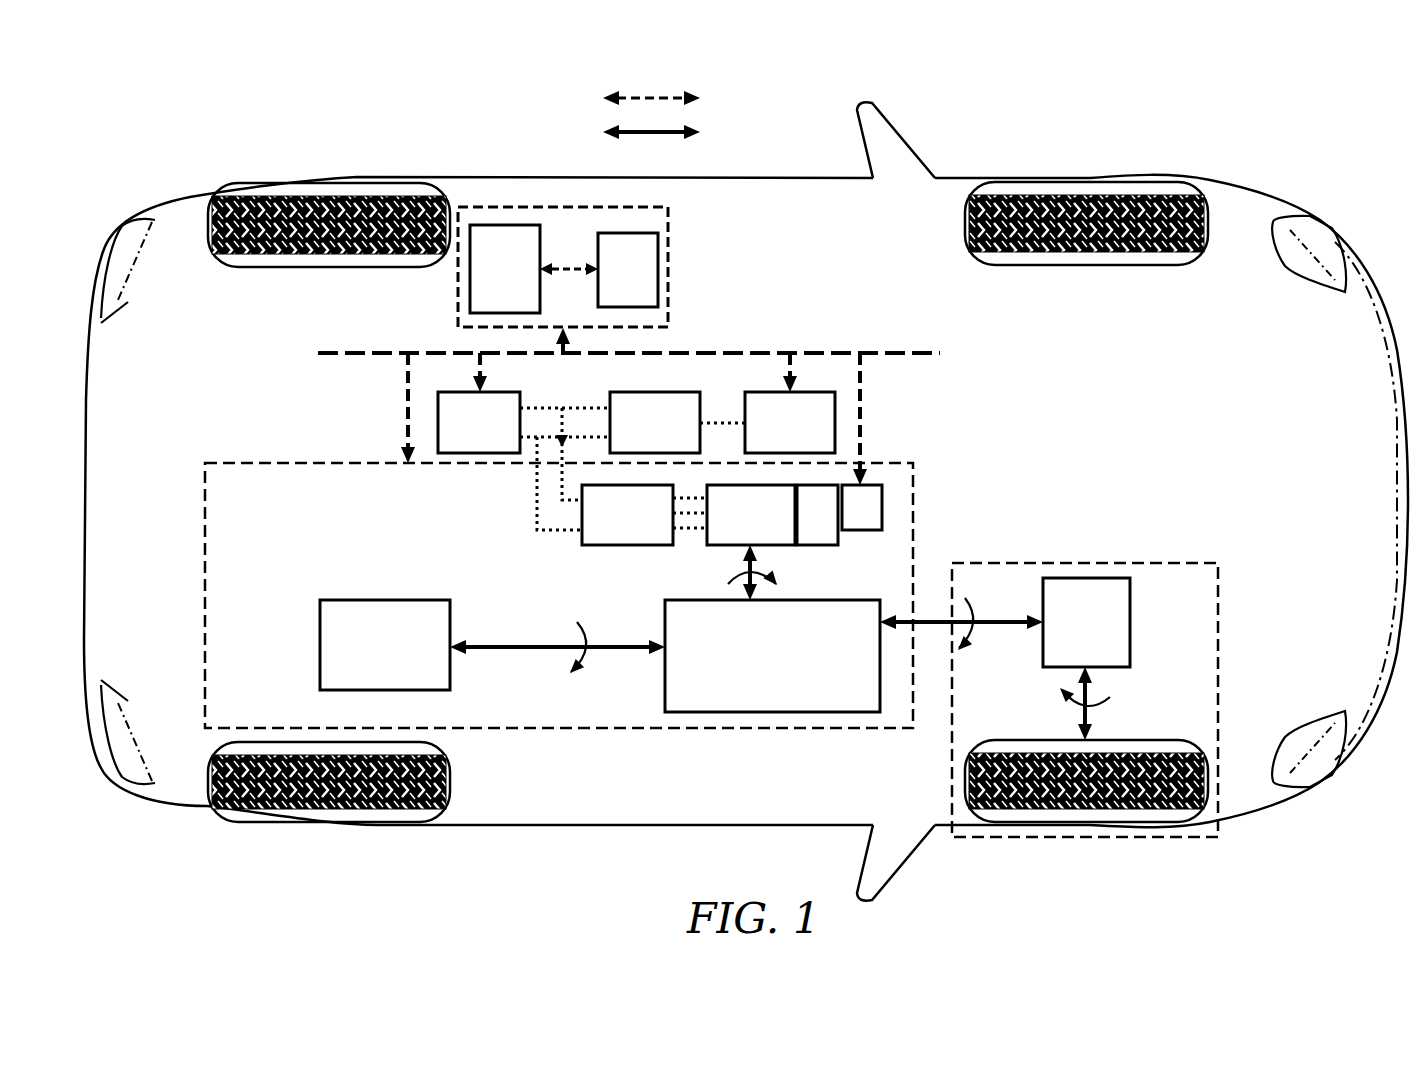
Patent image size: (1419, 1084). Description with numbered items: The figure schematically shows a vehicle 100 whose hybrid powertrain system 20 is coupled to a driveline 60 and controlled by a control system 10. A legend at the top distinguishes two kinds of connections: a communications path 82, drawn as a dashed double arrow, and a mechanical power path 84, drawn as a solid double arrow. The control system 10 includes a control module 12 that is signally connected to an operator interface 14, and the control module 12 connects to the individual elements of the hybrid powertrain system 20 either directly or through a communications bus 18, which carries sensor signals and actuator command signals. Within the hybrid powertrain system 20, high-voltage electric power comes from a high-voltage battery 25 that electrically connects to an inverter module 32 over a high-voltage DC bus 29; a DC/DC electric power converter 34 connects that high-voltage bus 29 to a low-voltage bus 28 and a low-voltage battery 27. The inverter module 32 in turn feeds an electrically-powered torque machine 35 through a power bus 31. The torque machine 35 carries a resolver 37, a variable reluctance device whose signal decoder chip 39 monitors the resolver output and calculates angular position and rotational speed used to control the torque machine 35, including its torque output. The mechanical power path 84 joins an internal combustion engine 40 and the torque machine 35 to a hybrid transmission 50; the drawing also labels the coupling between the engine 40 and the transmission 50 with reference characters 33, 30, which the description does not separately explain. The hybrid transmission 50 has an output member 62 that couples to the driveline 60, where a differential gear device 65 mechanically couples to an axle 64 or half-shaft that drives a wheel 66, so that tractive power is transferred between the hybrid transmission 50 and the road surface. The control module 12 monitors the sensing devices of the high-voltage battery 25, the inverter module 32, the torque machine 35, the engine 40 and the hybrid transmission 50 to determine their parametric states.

The vehicle 100 is at (1173, 362).
The communications path 82 is at (738, 111).
The mechanical power path 84 is at (738, 145).
The control system 10 is at (563, 267).
The control module 12 is at (518, 282).
The operator interface 14 is at (641, 283).
The communications bus 18 is at (352, 345).
The high-voltage battery 25 is at (492, 436).
The low-voltage battery 27 is at (803, 436).
The low-voltage bus 28 is at (720, 423).
The high-voltage DC bus 29 is at (578, 404).
The DC/DC electric power converter 34 is at (668, 436).
The hybrid powertrain system 20 is at (600, 584).
The inverter module 32 is at (640, 528).
The electrically-powered torque machine 35 is at (764, 528).
The resolver 37 is at (830, 528).
The signal decoder chip 39 is at (874, 521).
The power bus 31 is at (690, 548).
The output shaft 33 is at (594, 609).
The driveline 30 is at (505, 645).
The internal combustion engine 40 is at (398, 658).
The hybrid transmission 50 is at (785, 669).
The output member 62 is at (932, 622).
The driveline 60 is at (1085, 671).
The differential gear device 65 is at (1099, 636).
The axle 64 is at (1097, 690).
The wheel 66 is at (1128, 730).